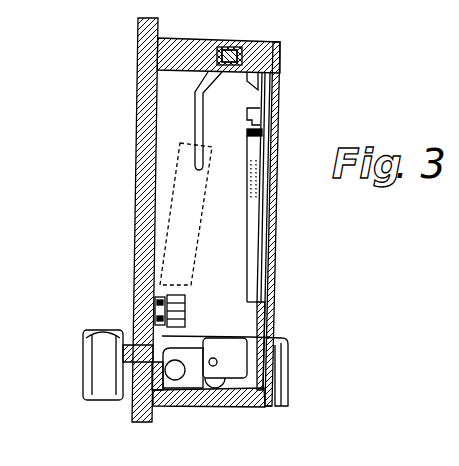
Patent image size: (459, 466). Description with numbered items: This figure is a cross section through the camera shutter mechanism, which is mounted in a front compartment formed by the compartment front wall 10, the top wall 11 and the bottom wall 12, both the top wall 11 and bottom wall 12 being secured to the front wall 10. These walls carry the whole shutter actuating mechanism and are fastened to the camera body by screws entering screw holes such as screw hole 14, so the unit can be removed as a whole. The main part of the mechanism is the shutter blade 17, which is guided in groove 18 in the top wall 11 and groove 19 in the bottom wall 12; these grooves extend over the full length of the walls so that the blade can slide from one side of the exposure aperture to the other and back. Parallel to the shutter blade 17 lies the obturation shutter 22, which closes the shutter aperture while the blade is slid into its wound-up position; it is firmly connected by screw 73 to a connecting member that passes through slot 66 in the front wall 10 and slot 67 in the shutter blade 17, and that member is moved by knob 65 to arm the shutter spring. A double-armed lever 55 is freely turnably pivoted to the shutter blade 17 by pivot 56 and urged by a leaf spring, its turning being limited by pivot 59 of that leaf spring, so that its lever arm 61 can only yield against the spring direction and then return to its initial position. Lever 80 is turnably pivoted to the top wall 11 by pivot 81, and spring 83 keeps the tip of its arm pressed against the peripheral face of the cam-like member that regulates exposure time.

The compartment front wall 10 is at (140, 185).
The top wall 11 is at (186, 45).
The bottom wall 12 is at (203, 406).
The screw hole 14 is at (193, 345).
The shutter blade 17 is at (256, 73).
The groove 18 is at (280, 60).
The groove 19 is at (258, 407).
The obturation shutter 22 is at (262, 123).
The double-armed lever 55 is at (256, 248).
The pivot 56 is at (257, 176).
The pivot of leaf spring 59 is at (255, 134).
The lever arm 61 is at (259, 275).
The knob 65 is at (93, 388).
The slot 66 is at (130, 345).
The slot 67 is at (269, 336).
The screw 73 is at (276, 375).
The lever 80 is at (195, 92).
The pivot 81 is at (233, 46).
The spring 83 is at (172, 238).